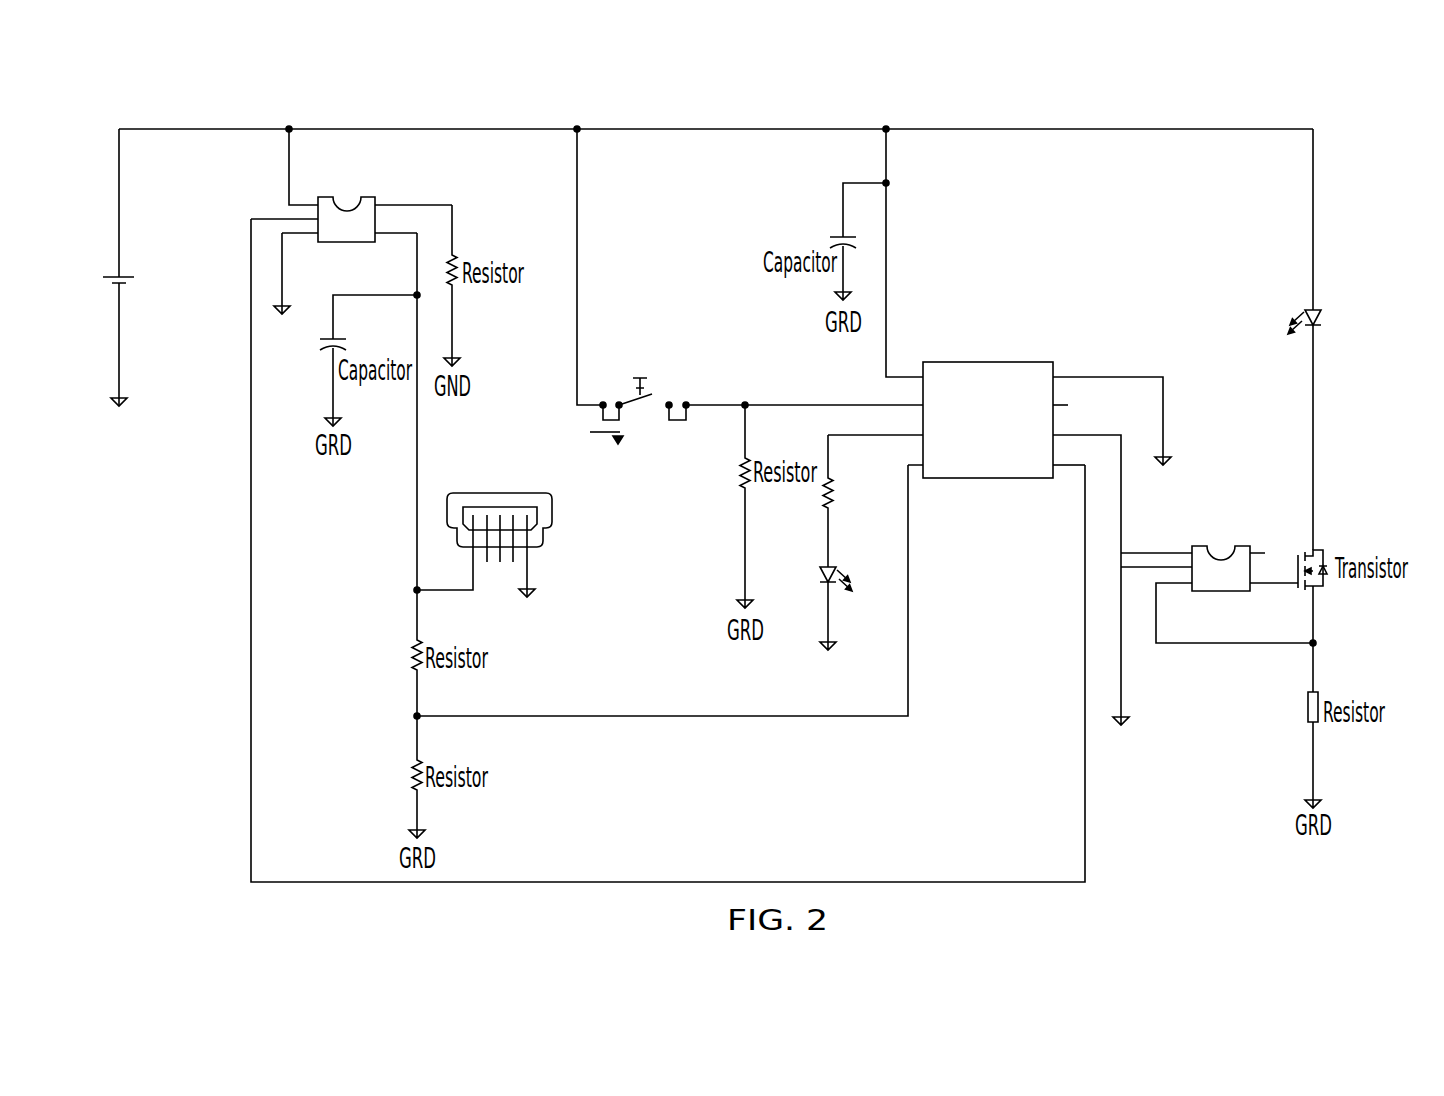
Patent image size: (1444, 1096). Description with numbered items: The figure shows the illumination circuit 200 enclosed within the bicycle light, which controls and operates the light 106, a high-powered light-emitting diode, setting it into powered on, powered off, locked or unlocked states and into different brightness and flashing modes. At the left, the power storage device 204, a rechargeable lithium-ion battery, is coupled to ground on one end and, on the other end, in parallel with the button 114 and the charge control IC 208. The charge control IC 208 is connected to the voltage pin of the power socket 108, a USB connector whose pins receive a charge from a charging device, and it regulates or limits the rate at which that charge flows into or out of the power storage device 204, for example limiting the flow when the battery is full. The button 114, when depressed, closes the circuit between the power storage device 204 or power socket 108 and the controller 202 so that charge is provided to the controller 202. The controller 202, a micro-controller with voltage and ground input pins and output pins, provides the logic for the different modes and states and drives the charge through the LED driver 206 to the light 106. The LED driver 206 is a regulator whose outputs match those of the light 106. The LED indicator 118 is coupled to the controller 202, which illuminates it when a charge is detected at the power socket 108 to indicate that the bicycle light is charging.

The illumination circuit 200 is at (173, 114).
The power storage device 204 is at (120, 227).
The charge control IC 208 is at (363, 197).
The power socket 108 is at (552, 510).
The button 114 is at (683, 403).
The LED indicator 118 is at (832, 566).
The controller 202 is at (988, 362).
The LED driver 206 is at (1243, 545).
The light 106 is at (1317, 307).